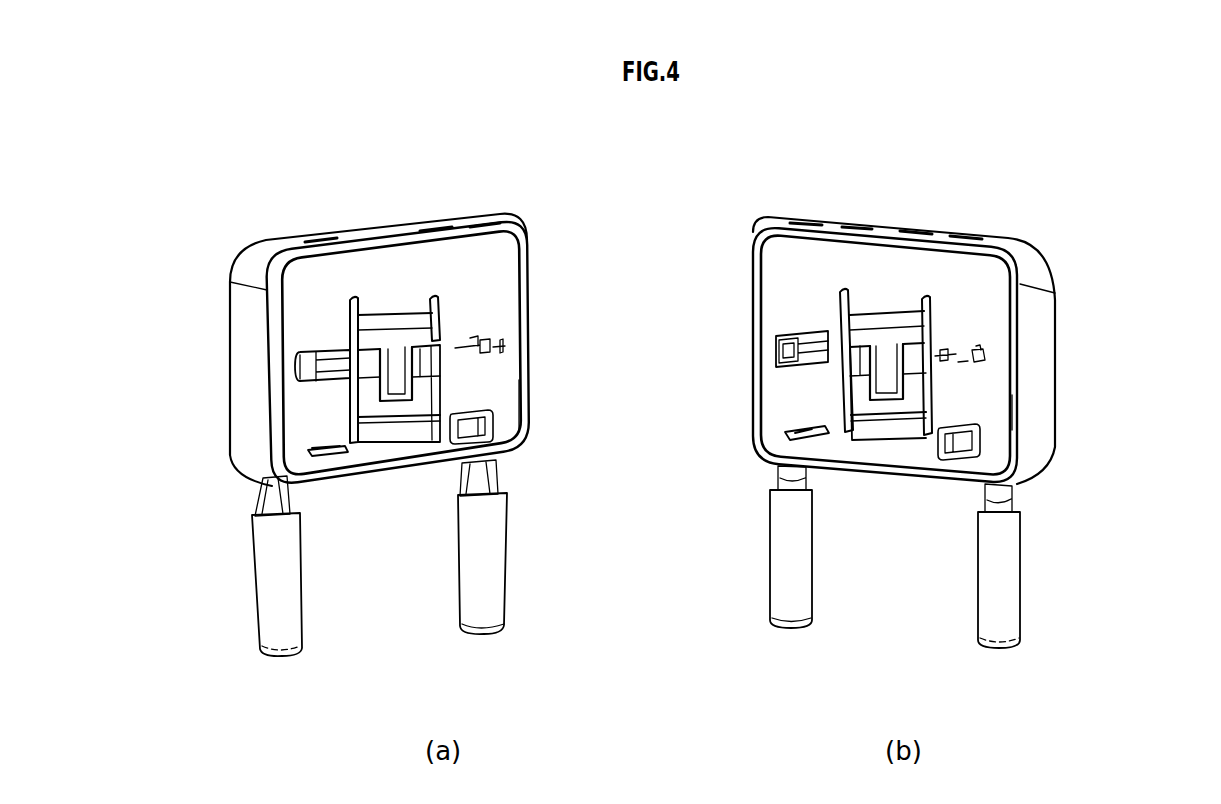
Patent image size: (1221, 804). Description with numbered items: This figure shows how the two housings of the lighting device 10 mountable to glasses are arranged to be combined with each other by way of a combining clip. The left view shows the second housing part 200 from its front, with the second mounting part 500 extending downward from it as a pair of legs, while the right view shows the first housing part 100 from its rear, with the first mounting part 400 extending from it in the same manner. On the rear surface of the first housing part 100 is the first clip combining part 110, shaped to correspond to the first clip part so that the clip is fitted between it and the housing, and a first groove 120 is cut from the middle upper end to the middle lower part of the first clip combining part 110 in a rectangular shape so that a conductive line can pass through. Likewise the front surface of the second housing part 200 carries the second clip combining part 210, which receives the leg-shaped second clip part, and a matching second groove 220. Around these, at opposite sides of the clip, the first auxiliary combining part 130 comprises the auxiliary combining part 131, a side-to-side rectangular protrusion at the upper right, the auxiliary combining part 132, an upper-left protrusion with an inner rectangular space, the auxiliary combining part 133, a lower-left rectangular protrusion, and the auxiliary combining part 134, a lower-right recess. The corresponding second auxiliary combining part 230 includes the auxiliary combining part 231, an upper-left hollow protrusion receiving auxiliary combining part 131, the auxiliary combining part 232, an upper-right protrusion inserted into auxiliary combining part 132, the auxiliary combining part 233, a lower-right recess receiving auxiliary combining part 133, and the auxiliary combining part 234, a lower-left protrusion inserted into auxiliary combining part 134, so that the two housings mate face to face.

The lighting device 10 is at (653, 423).
The first housing part 100 is at (1027, 255).
The first clip combining part 110 is at (866, 358).
The first groove 120 is at (885, 375).
The first auxiliary combining part 130 is at (1160, 346).
The auxiliary combining part 131 is at (940, 357).
The auxiliary combining part 132 is at (790, 355).
The auxiliary combining part 133 is at (790, 438).
The auxiliary combining part 134 is at (1035, 395).
The second housing part 200 is at (267, 258).
The second clip combining part 210 is at (372, 367).
The second groove 220 is at (397, 378).
The second auxiliary combining part 230 is at (158, 366).
The auxiliary combining part 231 is at (293, 363).
The auxiliary combining part 232 is at (470, 348).
The auxiliary combining part 233 is at (525, 380).
The auxiliary combining part 234 is at (305, 450).
The first mounting part 400 is at (790, 610).
The second mounting part 500 is at (281, 627).